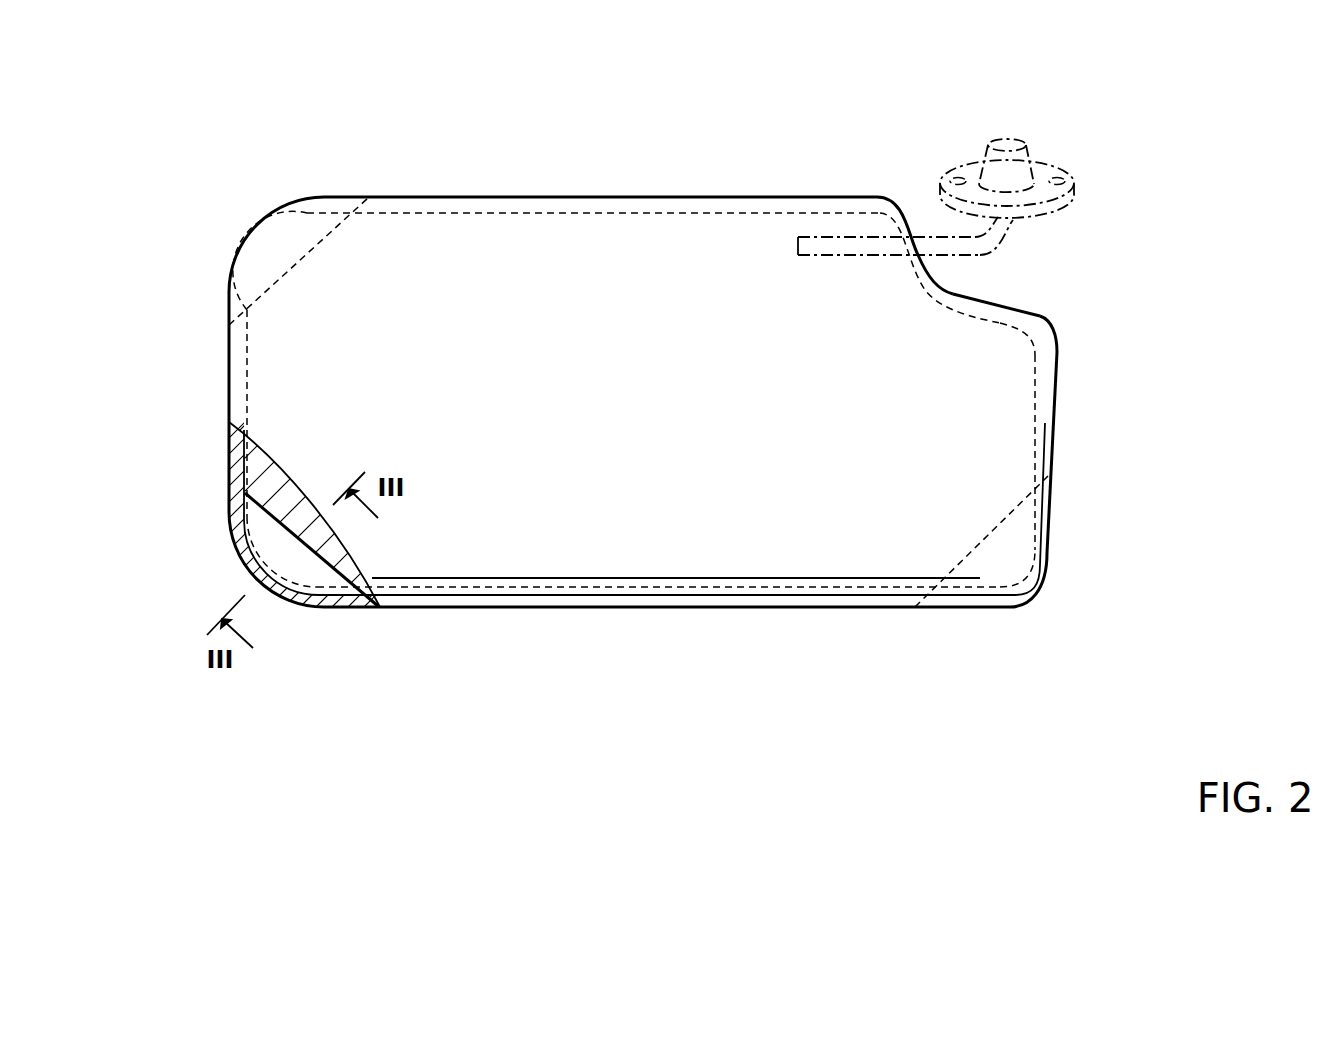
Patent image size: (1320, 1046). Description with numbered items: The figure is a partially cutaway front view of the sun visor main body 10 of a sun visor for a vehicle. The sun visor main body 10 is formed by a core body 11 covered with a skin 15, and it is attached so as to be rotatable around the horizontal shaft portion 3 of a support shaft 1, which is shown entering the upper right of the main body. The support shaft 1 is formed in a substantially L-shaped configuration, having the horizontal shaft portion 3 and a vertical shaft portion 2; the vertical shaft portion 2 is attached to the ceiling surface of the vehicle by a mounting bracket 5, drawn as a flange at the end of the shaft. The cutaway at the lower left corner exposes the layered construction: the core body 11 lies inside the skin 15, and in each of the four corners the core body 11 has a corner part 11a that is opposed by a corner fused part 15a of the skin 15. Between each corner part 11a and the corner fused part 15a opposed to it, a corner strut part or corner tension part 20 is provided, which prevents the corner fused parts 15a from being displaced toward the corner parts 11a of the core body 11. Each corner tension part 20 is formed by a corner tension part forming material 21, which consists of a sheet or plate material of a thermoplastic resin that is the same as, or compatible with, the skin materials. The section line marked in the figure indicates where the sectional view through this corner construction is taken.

The sun visor main body 10 is at (553, 188).
The support shaft 1 is at (925, 219).
The vertical shaft portion 2 is at (1012, 222).
The horizontal shaft portion 3 is at (841, 245).
The mounting bracket 5 is at (1043, 163).
The core body 11 is at (258, 468).
The corner parts 11a is at (292, 222).
The skin 15 is at (226, 380).
The corner fused parts 15a is at (243, 246).
The corner tension parts 20 is at (265, 218).
The corner tension part forming materials 21 is at (663, 444).